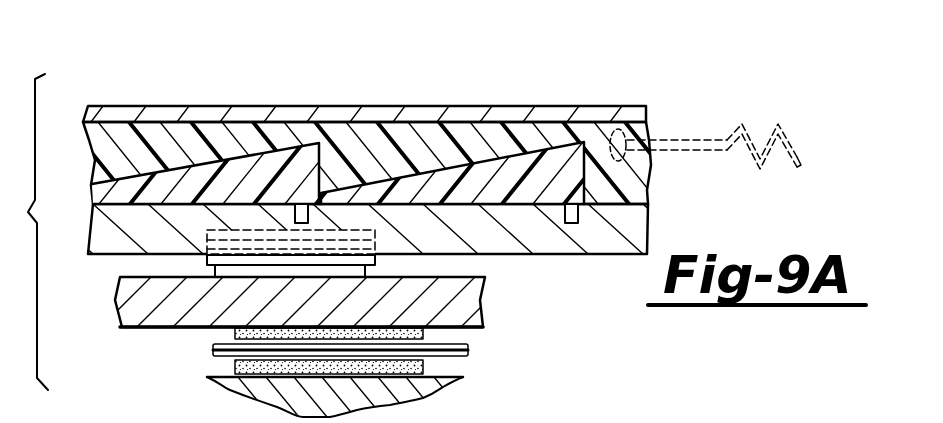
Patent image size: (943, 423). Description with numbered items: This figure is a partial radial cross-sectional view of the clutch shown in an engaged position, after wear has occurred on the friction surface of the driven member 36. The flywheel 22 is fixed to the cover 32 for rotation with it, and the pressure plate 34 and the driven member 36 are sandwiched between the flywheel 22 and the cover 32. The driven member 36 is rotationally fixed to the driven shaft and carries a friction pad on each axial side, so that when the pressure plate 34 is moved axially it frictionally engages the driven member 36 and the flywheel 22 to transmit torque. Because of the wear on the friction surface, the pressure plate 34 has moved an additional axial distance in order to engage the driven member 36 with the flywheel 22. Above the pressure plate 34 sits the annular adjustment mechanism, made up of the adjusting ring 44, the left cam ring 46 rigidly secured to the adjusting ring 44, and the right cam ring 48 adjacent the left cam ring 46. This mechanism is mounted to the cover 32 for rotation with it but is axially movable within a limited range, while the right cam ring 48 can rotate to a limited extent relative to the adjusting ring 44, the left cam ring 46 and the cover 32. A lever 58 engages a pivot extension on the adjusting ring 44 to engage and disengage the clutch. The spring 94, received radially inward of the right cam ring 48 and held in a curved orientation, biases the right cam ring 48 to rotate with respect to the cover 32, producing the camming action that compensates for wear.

The flywheel 22 is at (388, 392).
The cover 32 is at (457, 112).
The pressure plate 34 is at (452, 316).
The driven member 36 is at (470, 352).
The adjusting ring 44 is at (120, 223).
The left cam ring 46 is at (135, 188).
The right cam ring 48 is at (113, 145).
The lever 58 is at (373, 262).
The spring 94 is at (688, 148).